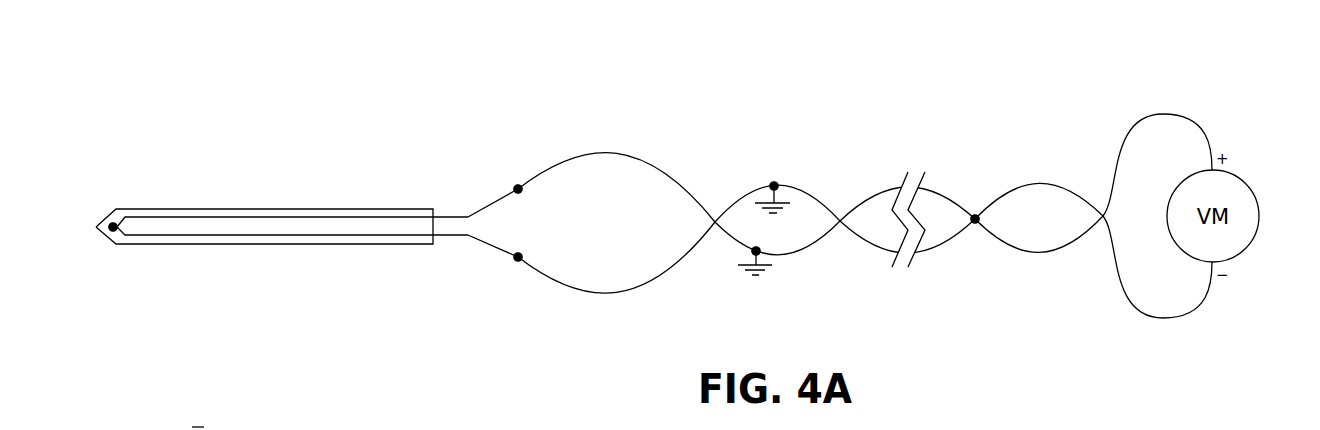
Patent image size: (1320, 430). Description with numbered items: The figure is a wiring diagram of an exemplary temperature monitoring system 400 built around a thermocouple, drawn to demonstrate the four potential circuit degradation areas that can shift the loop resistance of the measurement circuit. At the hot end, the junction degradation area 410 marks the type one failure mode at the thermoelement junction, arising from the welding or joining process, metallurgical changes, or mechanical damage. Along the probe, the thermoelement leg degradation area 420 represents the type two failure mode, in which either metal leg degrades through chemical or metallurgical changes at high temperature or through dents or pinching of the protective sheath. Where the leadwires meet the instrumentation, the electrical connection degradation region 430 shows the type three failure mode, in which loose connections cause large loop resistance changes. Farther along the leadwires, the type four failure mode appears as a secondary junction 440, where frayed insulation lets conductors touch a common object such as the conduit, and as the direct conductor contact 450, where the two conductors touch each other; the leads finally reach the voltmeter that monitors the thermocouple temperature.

The temperature monitoring system 400 is at (230, 90).
The junction degradation area 410 is at (120, 212).
The thermoelement leg degradation area 420 is at (298, 216).
The electrical connection degradation region 430 is at (501, 183).
The secondary junction 440 is at (784, 176).
The direct conductor contact secondary junction 450 is at (977, 207).